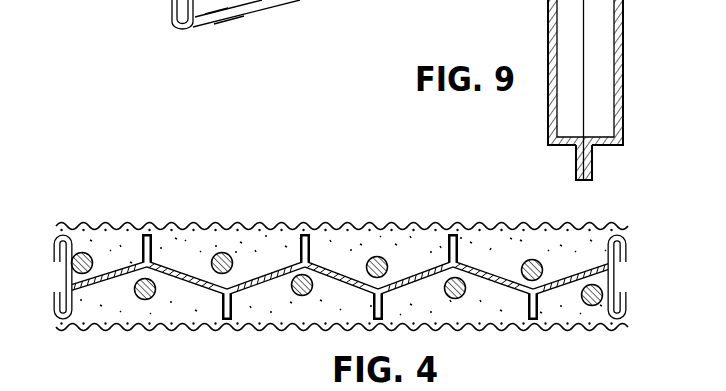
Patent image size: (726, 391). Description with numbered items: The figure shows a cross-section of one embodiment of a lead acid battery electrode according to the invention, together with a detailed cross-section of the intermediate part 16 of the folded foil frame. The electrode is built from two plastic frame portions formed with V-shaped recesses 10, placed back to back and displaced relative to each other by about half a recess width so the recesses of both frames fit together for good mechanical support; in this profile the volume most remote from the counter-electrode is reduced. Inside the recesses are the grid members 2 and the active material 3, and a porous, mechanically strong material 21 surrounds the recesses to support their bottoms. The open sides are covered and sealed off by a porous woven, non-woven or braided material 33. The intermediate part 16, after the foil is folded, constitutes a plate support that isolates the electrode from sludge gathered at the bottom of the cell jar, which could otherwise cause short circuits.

In FIG. 9, the V-shaped recesses 10 is at (547, 111).
In FIG. 4, the V-shaped recesses 10 is at (180, 262).
In FIG. 9, the intermediate part 16 is at (592, 163).
In FIG. 4, the porous mechanically strong material 21 is at (113, 262).
In FIG. 4, the grid members 2 is at (228, 256).
In FIG. 4, the active material 3 is at (270, 248).
In FIG. 4, the porous woven, non-woven or braided material 33 is at (353, 225).